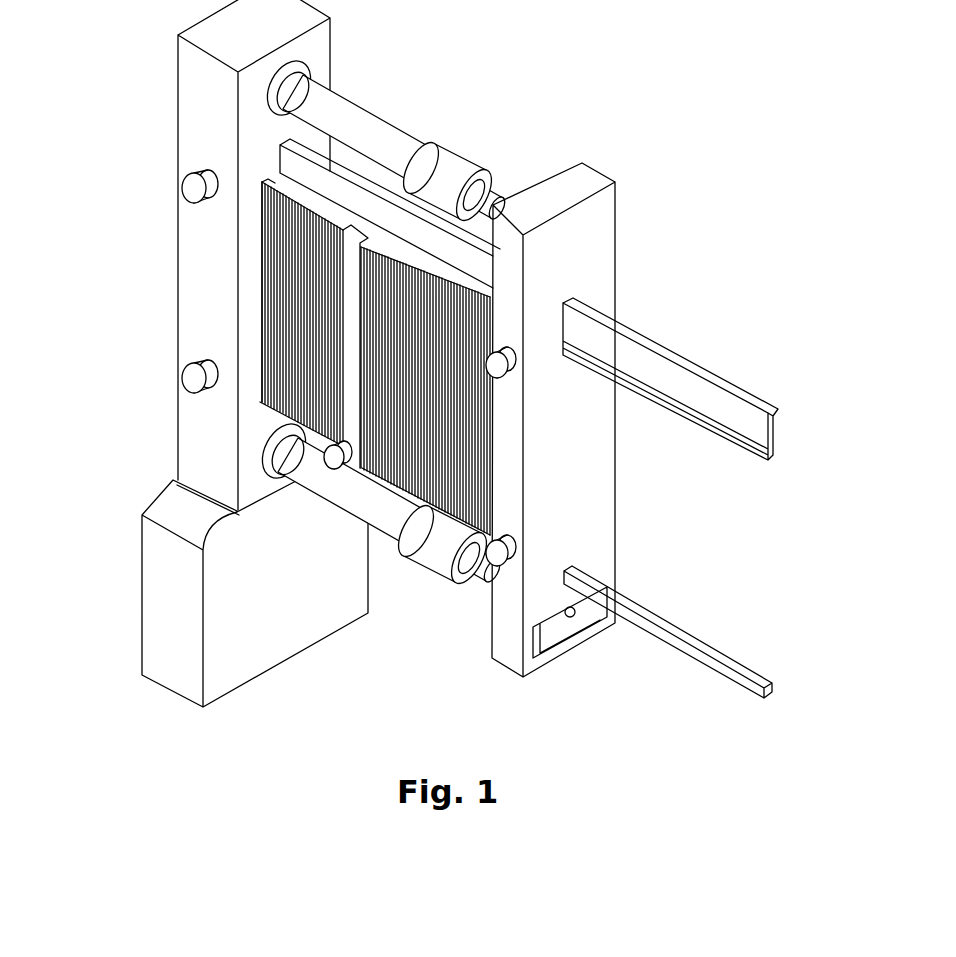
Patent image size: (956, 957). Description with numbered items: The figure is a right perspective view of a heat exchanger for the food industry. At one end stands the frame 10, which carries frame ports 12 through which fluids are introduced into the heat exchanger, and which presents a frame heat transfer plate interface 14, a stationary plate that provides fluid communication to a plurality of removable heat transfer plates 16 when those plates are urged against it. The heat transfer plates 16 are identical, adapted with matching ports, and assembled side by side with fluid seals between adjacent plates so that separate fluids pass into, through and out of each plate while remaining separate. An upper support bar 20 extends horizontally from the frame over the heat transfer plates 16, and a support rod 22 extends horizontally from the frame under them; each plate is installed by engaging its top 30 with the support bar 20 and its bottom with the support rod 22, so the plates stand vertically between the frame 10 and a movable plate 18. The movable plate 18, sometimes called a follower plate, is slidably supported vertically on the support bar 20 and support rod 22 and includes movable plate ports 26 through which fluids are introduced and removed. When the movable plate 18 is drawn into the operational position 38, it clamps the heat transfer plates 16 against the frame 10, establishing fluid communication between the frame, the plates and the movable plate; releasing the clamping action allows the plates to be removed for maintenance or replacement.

The frame 10 is at (185, 450).
The frame ports 12 is at (182, 172).
The frame heat transfer plate interface 14 is at (306, 332).
The heat transfer plates 16 is at (313, 207).
The movable plate 18 is at (606, 245).
The upper support bar 20 is at (410, 237).
The support rod 22 is at (668, 652).
The movable plate ports 26 is at (512, 370).
The top of the heat exchanger plates 30 is at (262, 183).
The operational position 38 is at (540, 100).